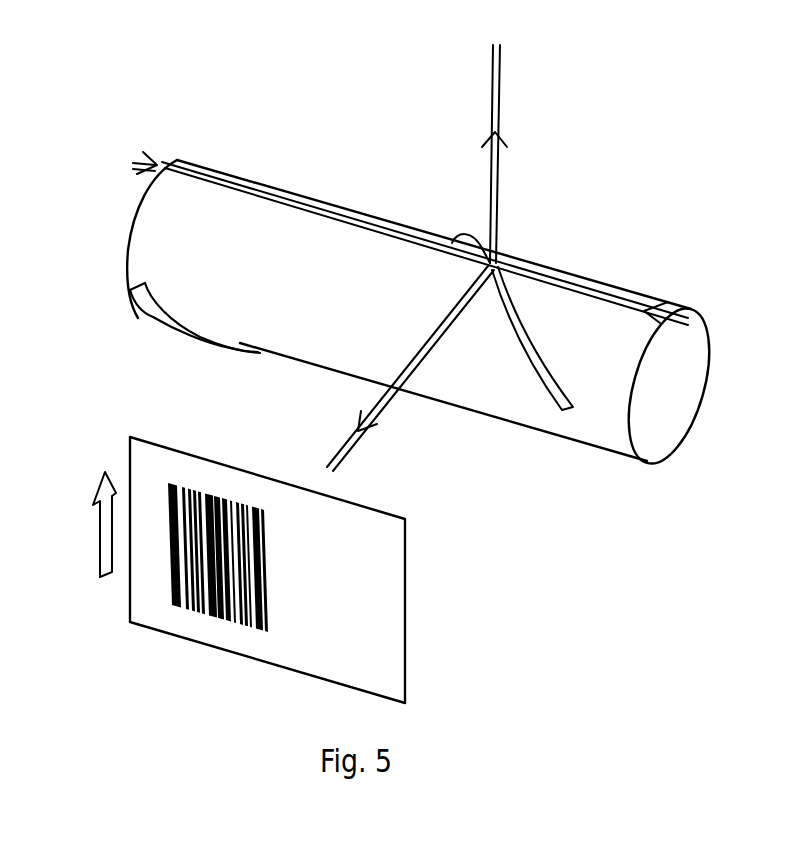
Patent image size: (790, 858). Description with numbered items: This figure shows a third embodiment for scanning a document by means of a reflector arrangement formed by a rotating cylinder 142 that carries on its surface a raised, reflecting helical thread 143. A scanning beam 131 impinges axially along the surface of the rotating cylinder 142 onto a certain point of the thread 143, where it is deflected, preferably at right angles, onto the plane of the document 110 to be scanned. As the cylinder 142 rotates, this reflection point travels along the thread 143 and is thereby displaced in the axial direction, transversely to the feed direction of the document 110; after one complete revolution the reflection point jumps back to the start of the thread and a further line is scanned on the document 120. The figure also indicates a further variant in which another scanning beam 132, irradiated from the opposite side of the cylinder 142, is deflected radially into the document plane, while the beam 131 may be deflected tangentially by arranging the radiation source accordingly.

The document 110 is at (267, 570).
The document 120 is at (265, 580).
The scanning beam 131 is at (337, 224).
The scanning beam 132 is at (493, 187).
The rotating cylinder 142 is at (131, 231).
The raised thread 143 is at (147, 307).